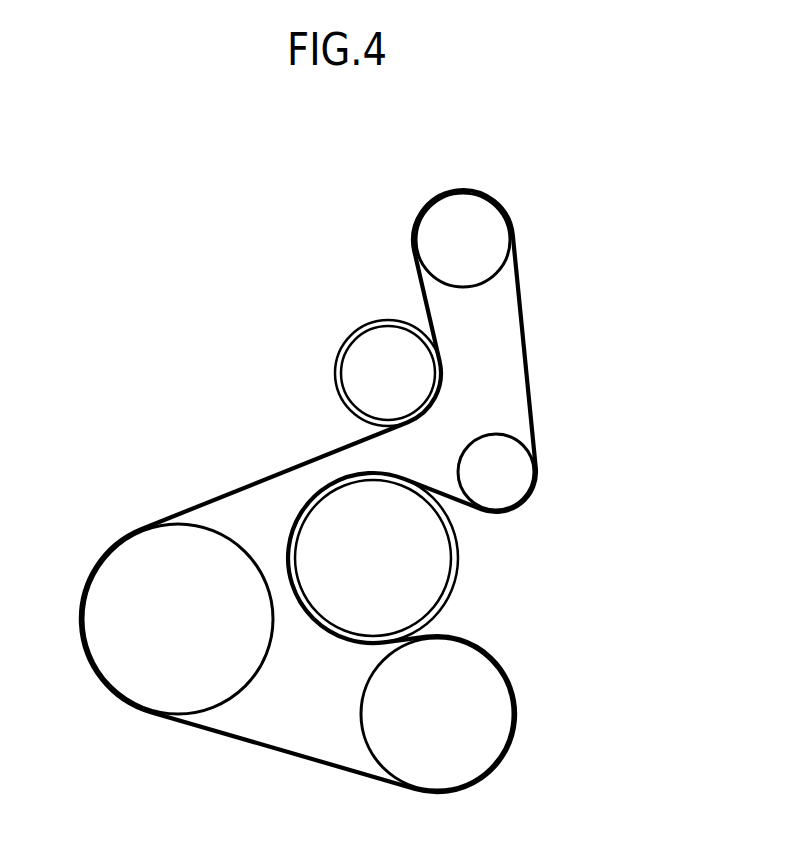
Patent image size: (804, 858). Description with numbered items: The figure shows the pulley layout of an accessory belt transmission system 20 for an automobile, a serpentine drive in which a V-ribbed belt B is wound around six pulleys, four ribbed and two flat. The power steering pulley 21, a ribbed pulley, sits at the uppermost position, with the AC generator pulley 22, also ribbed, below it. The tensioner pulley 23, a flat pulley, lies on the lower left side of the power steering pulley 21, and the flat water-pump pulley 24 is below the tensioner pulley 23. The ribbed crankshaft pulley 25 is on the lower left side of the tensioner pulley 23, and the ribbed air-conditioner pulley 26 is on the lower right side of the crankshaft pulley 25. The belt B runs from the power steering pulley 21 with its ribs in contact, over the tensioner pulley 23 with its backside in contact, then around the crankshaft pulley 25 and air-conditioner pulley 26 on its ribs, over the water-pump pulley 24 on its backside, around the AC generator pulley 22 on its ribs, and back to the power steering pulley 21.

The accessory belt transmission system 20 is at (259, 212).
The power steering pulley 21 is at (495, 217).
The AC generator pulley 22 is at (513, 486).
The tensioner pulley 23 is at (365, 336).
The water-pump pulley 24 is at (440, 562).
The crankshaft pulley 25 is at (132, 690).
The air-conditioner pulley 26 is at (498, 712).
The V-ribbed belt B is at (283, 472).